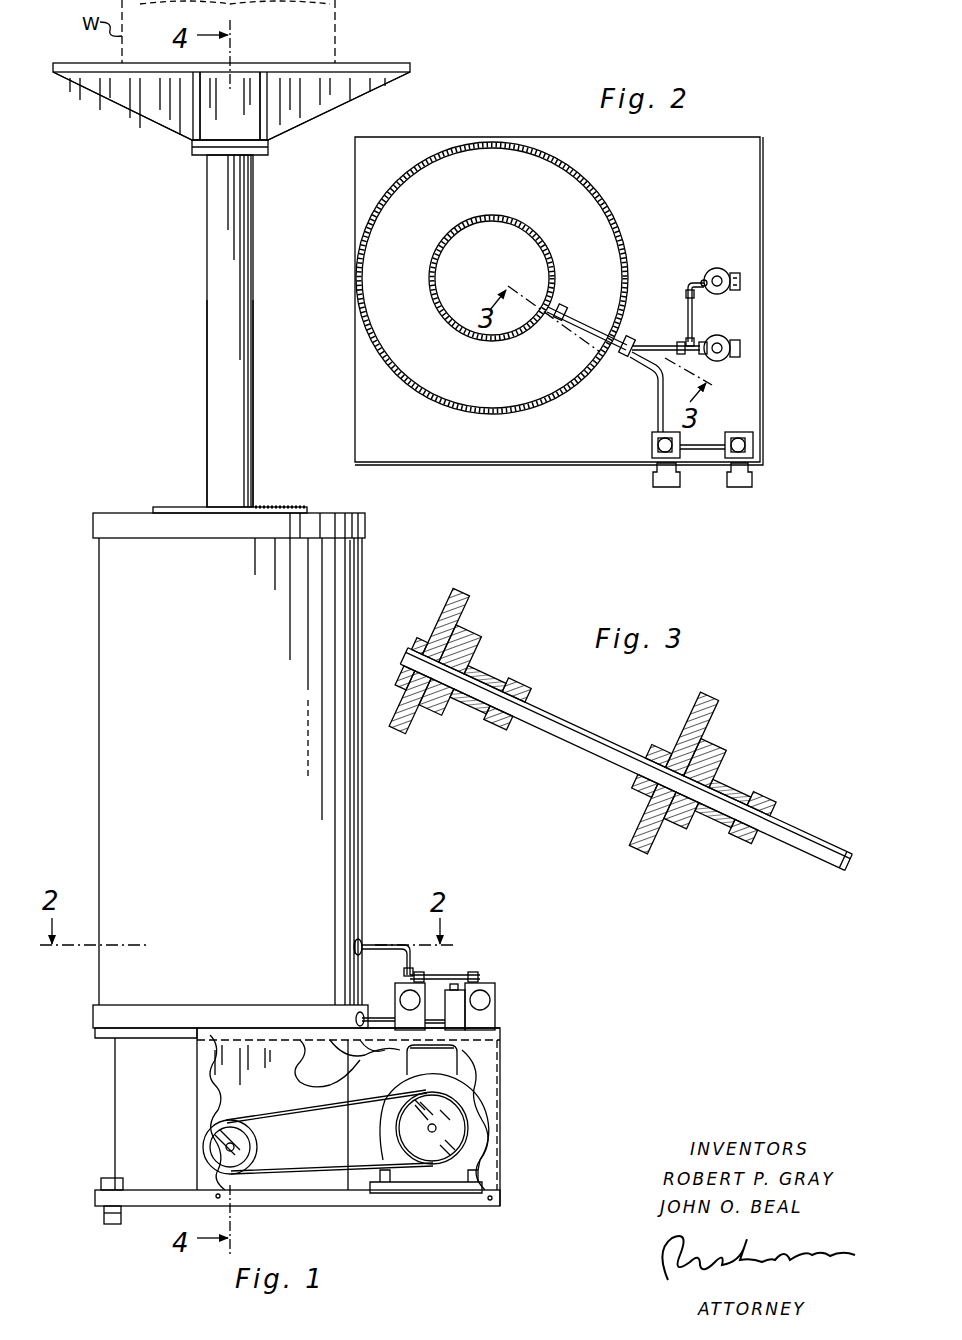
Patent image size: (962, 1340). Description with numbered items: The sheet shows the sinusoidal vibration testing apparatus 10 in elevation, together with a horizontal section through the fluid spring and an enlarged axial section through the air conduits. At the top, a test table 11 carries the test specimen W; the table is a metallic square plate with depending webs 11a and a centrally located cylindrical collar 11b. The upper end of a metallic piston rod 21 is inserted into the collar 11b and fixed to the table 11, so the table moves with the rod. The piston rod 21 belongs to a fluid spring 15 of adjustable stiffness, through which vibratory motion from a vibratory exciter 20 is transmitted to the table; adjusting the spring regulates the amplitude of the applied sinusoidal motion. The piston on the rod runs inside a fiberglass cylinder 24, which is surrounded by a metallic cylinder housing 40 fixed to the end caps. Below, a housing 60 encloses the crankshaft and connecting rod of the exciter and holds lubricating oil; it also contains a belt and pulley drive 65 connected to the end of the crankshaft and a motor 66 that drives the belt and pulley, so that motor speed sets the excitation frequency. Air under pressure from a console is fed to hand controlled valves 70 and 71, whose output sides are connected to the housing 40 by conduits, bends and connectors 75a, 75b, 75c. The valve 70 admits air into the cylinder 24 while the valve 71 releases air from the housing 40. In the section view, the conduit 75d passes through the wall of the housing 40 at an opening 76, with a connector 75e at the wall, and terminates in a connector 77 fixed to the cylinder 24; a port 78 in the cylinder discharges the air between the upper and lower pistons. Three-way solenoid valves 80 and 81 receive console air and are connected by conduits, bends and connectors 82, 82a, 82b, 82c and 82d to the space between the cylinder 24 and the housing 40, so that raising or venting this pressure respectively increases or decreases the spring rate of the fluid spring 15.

In FIG. 1, the sinusoidal vibration testing apparatus 10 is at (205, 290).
In FIG. 1, the test table 11 is at (345, 100).
In FIG. 1, the depending webs 11a is at (148, 108).
In FIG. 1, the cylindrical collar 11b is at (252, 138).
In FIG. 1, the fluid spring 15 is at (97, 608).
In FIG. 1, the vibratory exciter 20 is at (297, 1180).
In FIG. 1, the piston rod 21 is at (220, 426).
In FIG. 2, the cylinder 24 is at (530, 228).
In FIG. 3, the cylinder 24 is at (470, 605).
In FIG. 1, the cylinder housing 40 is at (350, 810).
In FIG. 2, the cylinder housing 40 is at (605, 198).
In FIG. 3, the cylinder housing 40 is at (652, 852).
In FIG. 1, the housing 60 is at (117, 1185).
In FIG. 1, the belt and pulley drive 65 is at (300, 1102).
In FIG. 1, the motor 66 is at (478, 1125).
In FIG. 1, the hand controlled valve 70 is at (486, 1017).
In FIG. 2, the hand controlled valve 70 is at (750, 478).
In FIG. 1, the hand controlled valve 71 is at (400, 985).
In FIG. 2, the hand controlled valve 71 is at (652, 445).
In FIG. 1, the connector 75a is at (482, 978).
In FIG. 2, the connector 75a is at (742, 440).
In FIG. 1, the conduit 75b is at (462, 978).
In FIG. 2, the conduit 75b is at (700, 458).
In FIG. 1, the connector 75c is at (424, 977).
In FIG. 2, the connector 75c is at (652, 475).
In FIG. 1, the conduit 75d is at (392, 946).
In FIG. 2, the conduit 75d is at (655, 404).
In FIG. 3, the conduit 75d is at (565, 732).
In FIG. 1, the connector 75e is at (355, 938).
In FIG. 2, the connector 75e is at (628, 352).
In FIG. 3, the connector 75e is at (748, 792).
In FIG. 2, the opening 76 is at (600, 338).
In FIG. 3, the opening 76 is at (645, 786).
In FIG. 2, the connector 77 is at (564, 308).
In FIG. 3, the connector 77 is at (468, 718).
In FIG. 3, the port 78 is at (428, 664).
In FIG. 2, the three-way solenoid valve 80 is at (735, 270).
In FIG. 1, the three-way solenoid valve 81 is at (500, 1030).
In FIG. 2, the three-way solenoid valve 81 is at (722, 362).
In FIG. 1, the conduit 82 is at (330, 1045).
In FIG. 2, the connector 82a is at (700, 280).
In FIG. 2, the conduit 82b is at (688, 314).
In FIG. 1, the connector 82c is at (432, 1060).
In FIG. 2, the connector 82c is at (703, 342).
In FIG. 1, the conduit 82d is at (383, 1040).
In FIG. 2, the conduit 82d is at (668, 346).